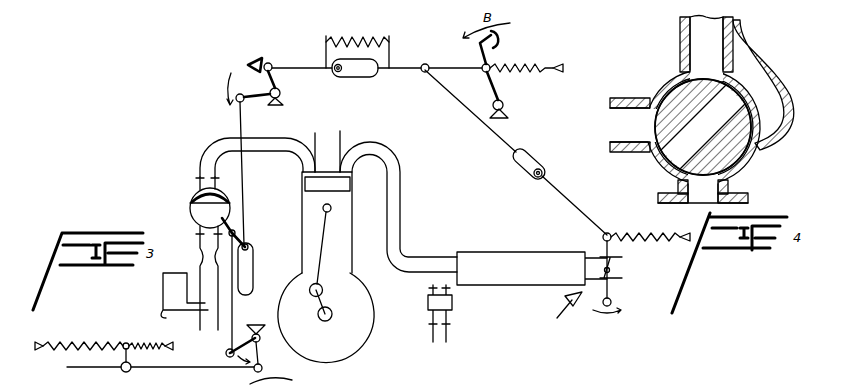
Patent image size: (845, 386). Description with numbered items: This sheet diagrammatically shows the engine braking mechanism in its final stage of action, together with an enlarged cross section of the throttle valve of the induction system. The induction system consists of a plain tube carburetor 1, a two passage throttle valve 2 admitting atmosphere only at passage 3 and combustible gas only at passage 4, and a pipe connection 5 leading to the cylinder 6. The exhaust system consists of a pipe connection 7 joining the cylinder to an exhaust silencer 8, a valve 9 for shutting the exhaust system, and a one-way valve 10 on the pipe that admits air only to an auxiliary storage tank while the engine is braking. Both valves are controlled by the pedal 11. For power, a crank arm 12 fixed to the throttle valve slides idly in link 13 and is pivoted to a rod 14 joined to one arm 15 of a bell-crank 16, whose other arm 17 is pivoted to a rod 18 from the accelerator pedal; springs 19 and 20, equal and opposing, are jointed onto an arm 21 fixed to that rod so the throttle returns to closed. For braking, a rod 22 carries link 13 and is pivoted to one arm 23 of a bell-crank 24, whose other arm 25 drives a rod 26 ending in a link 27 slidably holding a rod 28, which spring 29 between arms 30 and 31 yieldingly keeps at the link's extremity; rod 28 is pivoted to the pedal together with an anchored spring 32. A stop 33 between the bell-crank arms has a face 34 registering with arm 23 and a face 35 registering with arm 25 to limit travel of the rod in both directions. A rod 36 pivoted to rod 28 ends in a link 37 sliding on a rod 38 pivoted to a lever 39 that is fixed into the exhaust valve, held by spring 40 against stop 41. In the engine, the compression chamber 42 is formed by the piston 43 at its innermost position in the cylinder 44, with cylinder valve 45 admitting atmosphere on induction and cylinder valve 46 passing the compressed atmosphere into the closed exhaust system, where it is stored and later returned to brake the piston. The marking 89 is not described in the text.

The carburetor 1 is at (184, 301).
The throttle valve 2 is at (200, 182).
The passage 3 is at (192, 209).
The passage 4 is at (197, 219).
The pipe connection 5 is at (210, 148).
The cylinder 6 is at (300, 182).
The pipe connection 7 is at (402, 170).
The exhaust silencer 8 is at (477, 252).
The valve 9 is at (616, 267).
The one-way valve 10 is at (452, 305).
The pedal 11 is at (499, 37).
The crank arm 12 is at (240, 222).
The link 13 is at (254, 253).
The rod 14 is at (236, 307).
The arm 15 is at (227, 350).
The bell-crank 16 is at (255, 326).
The arm 17 is at (262, 354).
The rod 18 is at (183, 370).
The spring 19 is at (72, 350).
The spring 20 is at (138, 343).
The arm 21 is at (130, 357).
The rod 22 is at (249, 228).
The arm 23 is at (242, 103).
The bell-crank 24 is at (285, 103).
The arm 25 is at (282, 79).
The rod 26 is at (296, 65).
The link 27 is at (345, 78).
The rod 28 is at (382, 70).
The spring 29 is at (352, 37).
The arm 30 is at (326, 36).
The arm 31 is at (391, 38).
The spring 32 is at (517, 65).
The stop 33 is at (251, 58).
The face 34 is at (248, 89).
The face 35 is at (268, 63).
The rod 36 is at (460, 106).
The link 37 is at (543, 158).
The rod 38 is at (568, 197).
The lever 39 is at (619, 249).
The spring 40 is at (643, 233).
The stop 41 is at (560, 310).
The compression chamber 42 is at (345, 183).
The piston 43 is at (343, 229).
The cylinder 44 is at (355, 262).
The cylinder valve 45 is at (318, 133).
The cylinder valve 46 is at (342, 132).
The crank arrow 89 is at (280, 378).